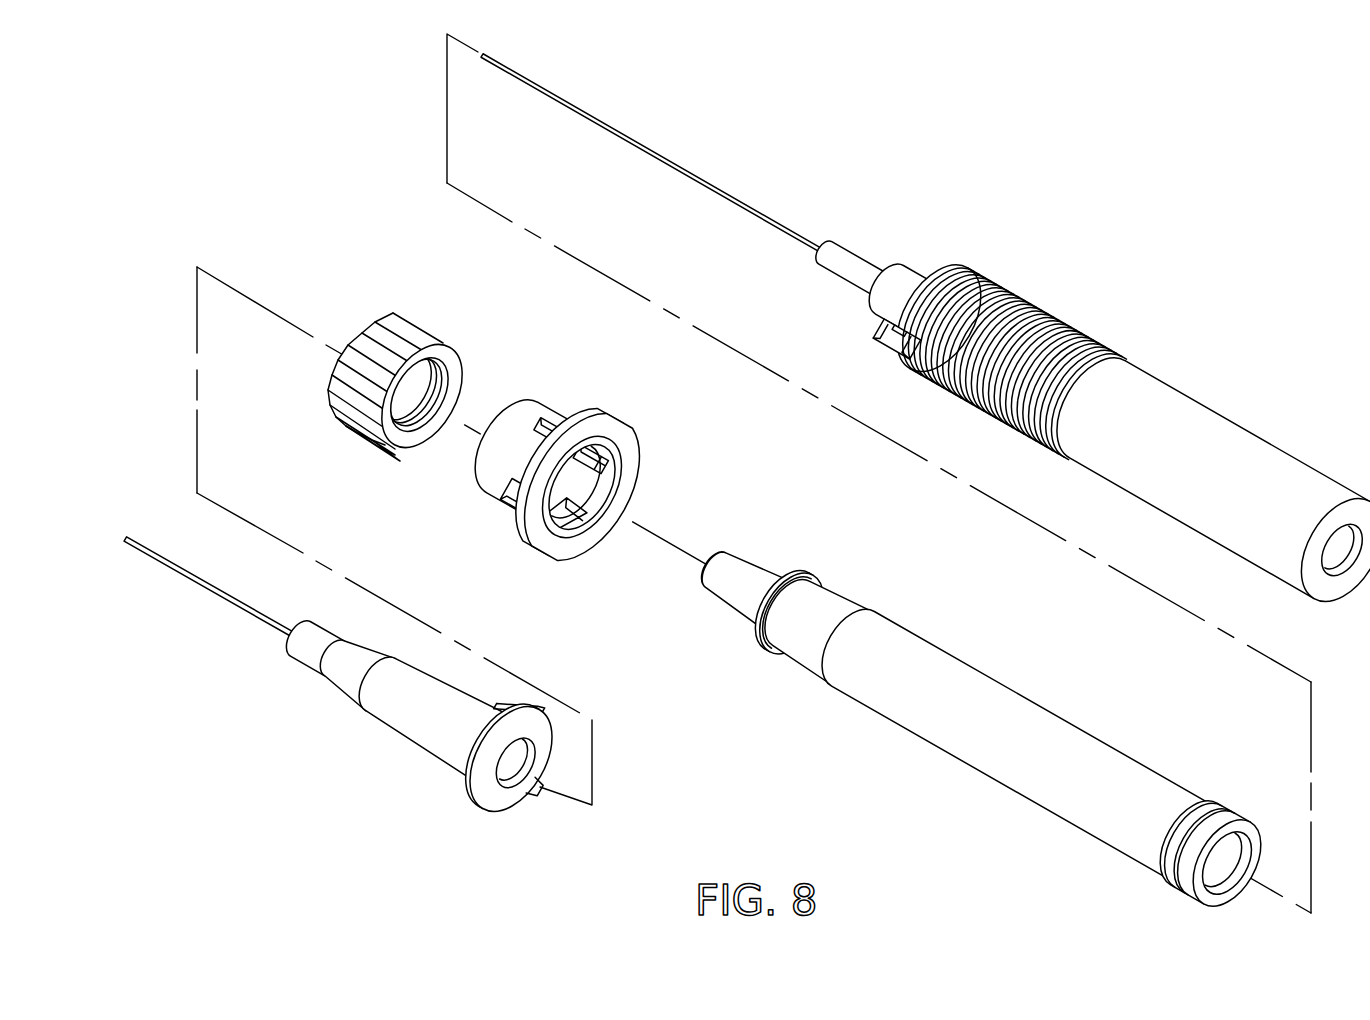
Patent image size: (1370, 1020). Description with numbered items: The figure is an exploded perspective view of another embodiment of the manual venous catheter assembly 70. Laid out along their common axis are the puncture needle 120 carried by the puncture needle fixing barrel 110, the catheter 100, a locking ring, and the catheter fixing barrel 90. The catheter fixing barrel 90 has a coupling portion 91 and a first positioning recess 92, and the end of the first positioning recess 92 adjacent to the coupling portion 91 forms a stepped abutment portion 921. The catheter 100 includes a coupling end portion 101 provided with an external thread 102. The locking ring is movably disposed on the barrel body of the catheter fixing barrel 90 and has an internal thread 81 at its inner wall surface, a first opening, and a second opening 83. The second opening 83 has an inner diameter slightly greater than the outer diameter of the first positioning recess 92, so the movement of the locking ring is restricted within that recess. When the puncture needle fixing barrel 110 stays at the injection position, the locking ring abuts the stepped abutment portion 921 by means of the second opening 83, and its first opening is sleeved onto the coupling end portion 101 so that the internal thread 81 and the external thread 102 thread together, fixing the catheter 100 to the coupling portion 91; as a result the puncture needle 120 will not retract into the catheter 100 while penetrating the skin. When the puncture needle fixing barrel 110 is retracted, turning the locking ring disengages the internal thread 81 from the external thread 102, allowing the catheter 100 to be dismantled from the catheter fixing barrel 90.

The manual venous catheter assembly 70 is at (703, 780).
The internal thread 81 is at (428, 383).
The second opening 83 is at (447, 382).
The catheter fixing barrel 90 is at (981, 728).
The coupling portion 91 is at (738, 598).
The first positioning recess 92 is at (812, 646).
The stepped abutment portion 921 is at (822, 584).
The catheter 100 is at (338, 685).
The coupling end portion 101 is at (488, 778).
The external thread 102 is at (540, 788).
The puncture needle fixing barrel 110 is at (1182, 372).
The puncture needle 120 is at (673, 162).